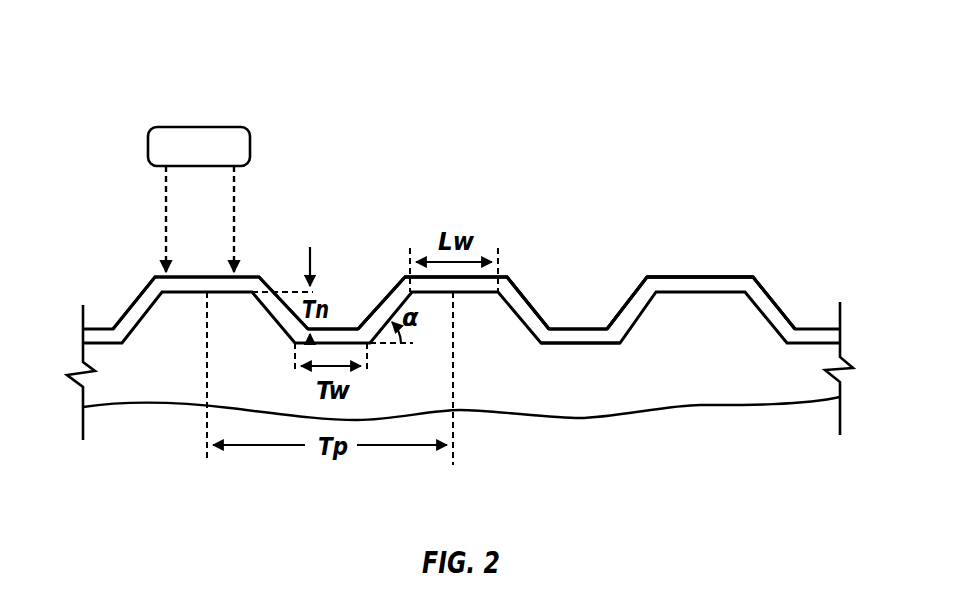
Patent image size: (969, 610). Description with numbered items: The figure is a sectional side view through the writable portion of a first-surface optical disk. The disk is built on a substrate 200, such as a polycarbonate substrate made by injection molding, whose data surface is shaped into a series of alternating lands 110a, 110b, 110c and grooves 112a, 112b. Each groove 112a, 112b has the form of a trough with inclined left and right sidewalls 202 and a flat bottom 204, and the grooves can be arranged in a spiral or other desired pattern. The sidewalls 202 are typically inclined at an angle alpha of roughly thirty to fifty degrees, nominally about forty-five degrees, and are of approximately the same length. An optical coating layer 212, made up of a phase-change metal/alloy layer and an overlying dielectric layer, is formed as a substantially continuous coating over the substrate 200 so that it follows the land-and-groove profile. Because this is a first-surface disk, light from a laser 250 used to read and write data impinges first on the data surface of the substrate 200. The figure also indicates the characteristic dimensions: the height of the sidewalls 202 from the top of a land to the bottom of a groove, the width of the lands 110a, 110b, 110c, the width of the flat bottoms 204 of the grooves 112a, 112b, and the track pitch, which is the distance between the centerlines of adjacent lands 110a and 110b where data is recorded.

The substrate 200 is at (415, 406).
The sidewalls 202 is at (533, 312).
The flat bottoms 204 is at (582, 329).
The optical coating layer 212 is at (728, 274).
The land 110a is at (195, 258).
The land 110b is at (456, 214).
The land 110c is at (671, 254).
The groove 112a is at (344, 246).
The groove 112b is at (558, 274).
The laser 250 is at (233, 127).